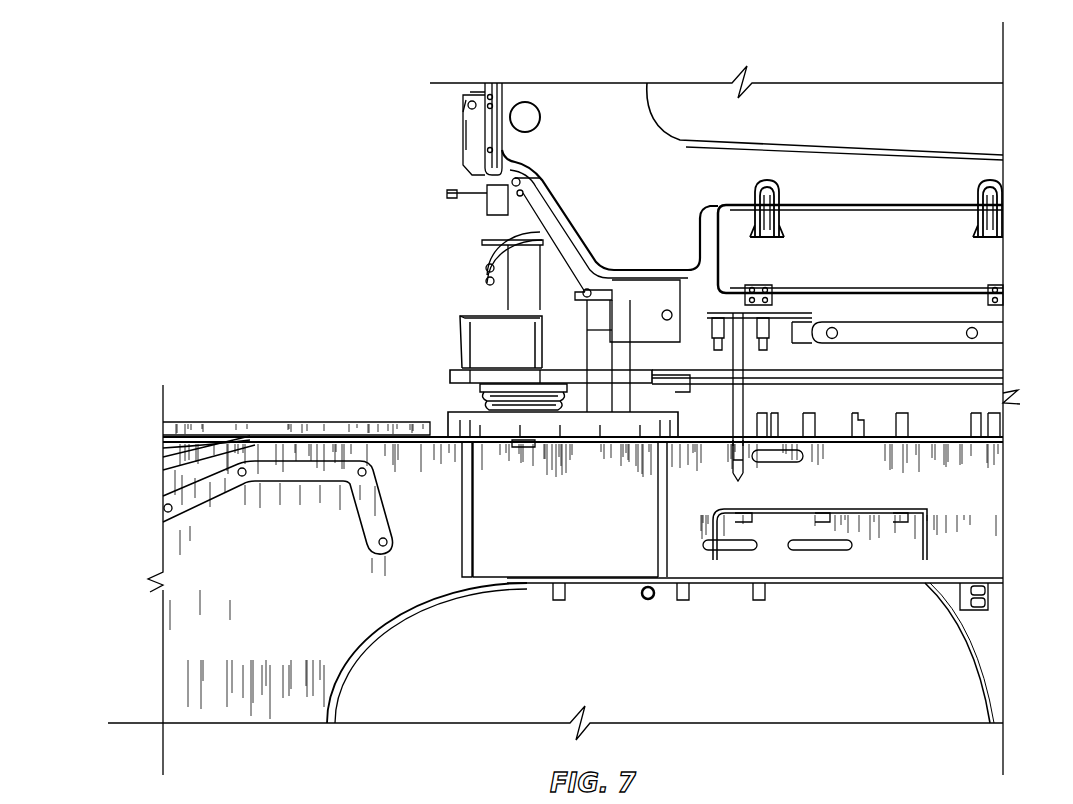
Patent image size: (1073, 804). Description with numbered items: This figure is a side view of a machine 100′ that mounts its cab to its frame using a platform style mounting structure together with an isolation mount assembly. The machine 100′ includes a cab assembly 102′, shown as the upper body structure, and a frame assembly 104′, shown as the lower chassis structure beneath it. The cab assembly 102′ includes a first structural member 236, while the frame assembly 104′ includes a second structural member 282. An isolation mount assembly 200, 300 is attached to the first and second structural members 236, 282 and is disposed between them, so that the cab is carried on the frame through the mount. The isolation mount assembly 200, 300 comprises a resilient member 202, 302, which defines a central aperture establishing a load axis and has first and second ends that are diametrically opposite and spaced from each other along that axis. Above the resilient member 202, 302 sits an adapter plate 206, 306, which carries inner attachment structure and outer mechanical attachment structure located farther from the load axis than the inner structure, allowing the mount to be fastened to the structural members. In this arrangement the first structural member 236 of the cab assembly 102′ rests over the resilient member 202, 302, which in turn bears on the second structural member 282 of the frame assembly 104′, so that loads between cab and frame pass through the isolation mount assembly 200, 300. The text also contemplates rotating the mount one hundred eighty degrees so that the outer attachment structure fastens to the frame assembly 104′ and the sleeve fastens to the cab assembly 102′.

The machine 100′ is at (564, 398).
The cab assembly 102′ is at (733, 282).
The frame assembly 104′ is at (583, 572).
The isolation mount assembly 200 is at (494, 444).
The isolation mount assembly 300 is at (494, 444).
The resilient member 202 is at (494, 444).
The resilient member 302 is at (478, 398).
The adapter plate 206 is at (453, 340).
The adapter plate 306 is at (520, 384).
The first structural member 236 is at (447, 376).
The second structural member 282 is at (483, 425).